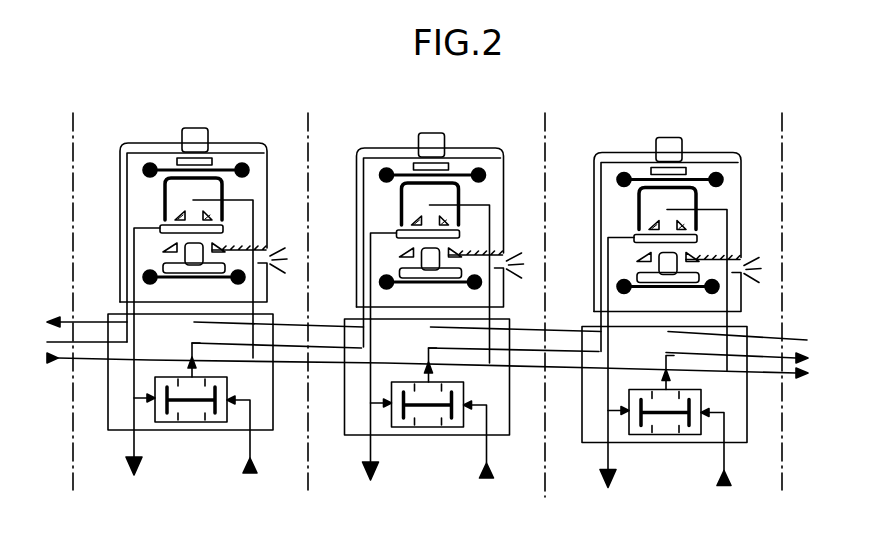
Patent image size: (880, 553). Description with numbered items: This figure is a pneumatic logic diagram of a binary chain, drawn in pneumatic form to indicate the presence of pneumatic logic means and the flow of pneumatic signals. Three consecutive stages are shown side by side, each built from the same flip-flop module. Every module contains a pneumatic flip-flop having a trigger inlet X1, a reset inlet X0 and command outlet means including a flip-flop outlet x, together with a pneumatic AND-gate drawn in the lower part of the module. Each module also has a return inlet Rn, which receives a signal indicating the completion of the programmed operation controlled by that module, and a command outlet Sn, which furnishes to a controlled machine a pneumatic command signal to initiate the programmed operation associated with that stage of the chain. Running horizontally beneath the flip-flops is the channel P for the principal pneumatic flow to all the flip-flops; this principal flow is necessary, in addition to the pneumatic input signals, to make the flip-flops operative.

The channel for principal pneumatic flow P is at (193, 204).
The trigger inlet X1 is at (195, 161).
The reset inlet X0 is at (194, 322).
The flip-flop outlet x is at (384, 271).
The command outlet Sn is at (138, 414).
The return inlet Rn is at (250, 455).